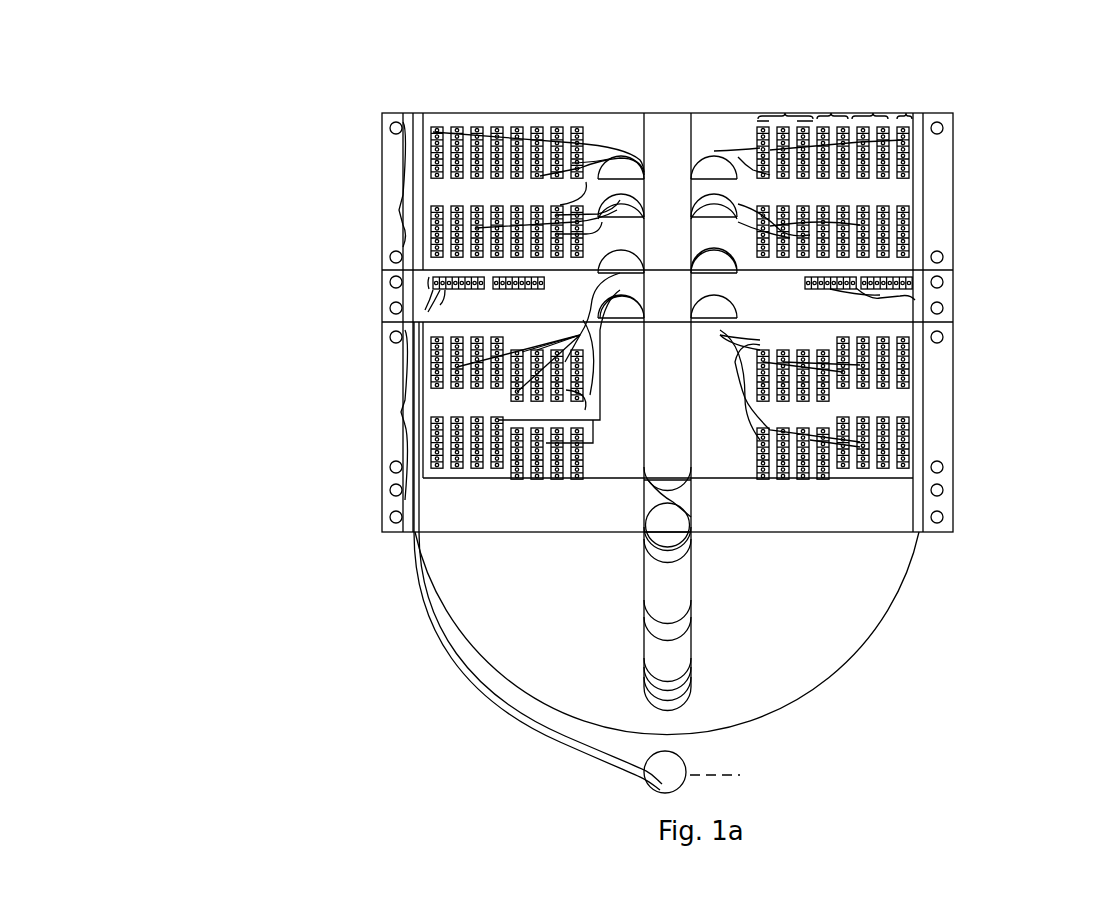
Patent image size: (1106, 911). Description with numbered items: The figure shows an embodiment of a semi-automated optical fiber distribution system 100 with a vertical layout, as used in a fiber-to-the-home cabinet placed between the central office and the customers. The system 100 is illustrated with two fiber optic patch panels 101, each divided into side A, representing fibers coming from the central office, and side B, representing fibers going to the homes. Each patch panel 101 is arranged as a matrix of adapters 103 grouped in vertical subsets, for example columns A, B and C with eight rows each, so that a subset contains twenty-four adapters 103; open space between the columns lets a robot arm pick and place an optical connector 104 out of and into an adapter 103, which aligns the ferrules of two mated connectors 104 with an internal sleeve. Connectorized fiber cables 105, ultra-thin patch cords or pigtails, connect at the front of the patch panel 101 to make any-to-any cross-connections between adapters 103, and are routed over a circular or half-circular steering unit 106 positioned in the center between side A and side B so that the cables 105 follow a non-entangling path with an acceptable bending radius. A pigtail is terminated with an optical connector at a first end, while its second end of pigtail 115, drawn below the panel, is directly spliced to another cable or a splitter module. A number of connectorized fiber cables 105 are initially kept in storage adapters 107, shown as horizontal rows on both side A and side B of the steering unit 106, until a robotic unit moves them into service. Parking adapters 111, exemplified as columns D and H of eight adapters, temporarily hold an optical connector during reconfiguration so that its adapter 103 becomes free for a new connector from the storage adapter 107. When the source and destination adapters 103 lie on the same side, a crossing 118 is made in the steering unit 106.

The optical fiber distribution system 100 is at (216, 139).
The patch panel 101 is at (388, 207).
The adapter 103 is at (850, 115).
The optical connector 104 is at (833, 192).
The connectorized fiber cable 105 is at (478, 648).
The steering unit 106 is at (688, 173).
The storage adapter 107 is at (432, 283).
The parking adapter 111 is at (908, 110).
The Second end of pigtail 115 is at (663, 788).
The crossing 118 is at (673, 502).